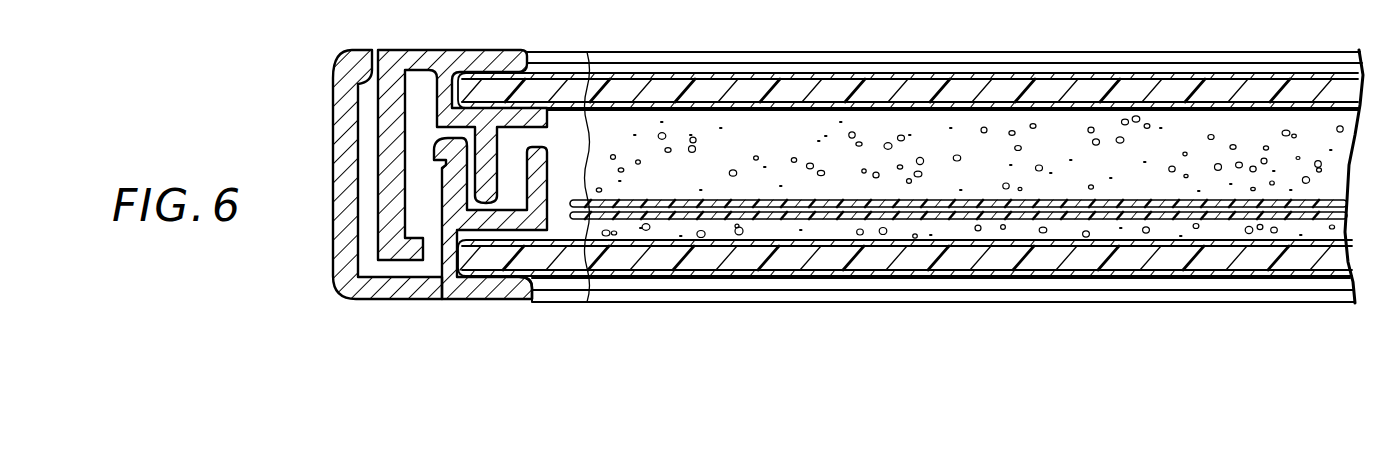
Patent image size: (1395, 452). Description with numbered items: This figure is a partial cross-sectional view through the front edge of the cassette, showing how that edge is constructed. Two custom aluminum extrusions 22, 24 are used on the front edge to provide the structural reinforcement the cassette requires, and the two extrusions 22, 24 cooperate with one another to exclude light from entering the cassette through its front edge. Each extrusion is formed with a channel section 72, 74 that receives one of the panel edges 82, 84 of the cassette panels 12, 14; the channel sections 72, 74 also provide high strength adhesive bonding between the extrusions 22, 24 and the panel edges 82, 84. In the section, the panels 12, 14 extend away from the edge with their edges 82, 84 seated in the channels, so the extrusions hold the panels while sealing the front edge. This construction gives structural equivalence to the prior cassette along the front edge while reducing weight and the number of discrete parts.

The cassette panel 12 is at (840, 302).
The cassette panel 14 is at (905, 52).
The aluminum extrusion 22 is at (358, 298).
The aluminum extrusion 24 is at (440, 56).
The channel section 72 is at (514, 296).
The channel section 74 is at (508, 58).
The panel edge 82 is at (470, 272).
The panel edge 84 is at (478, 88).